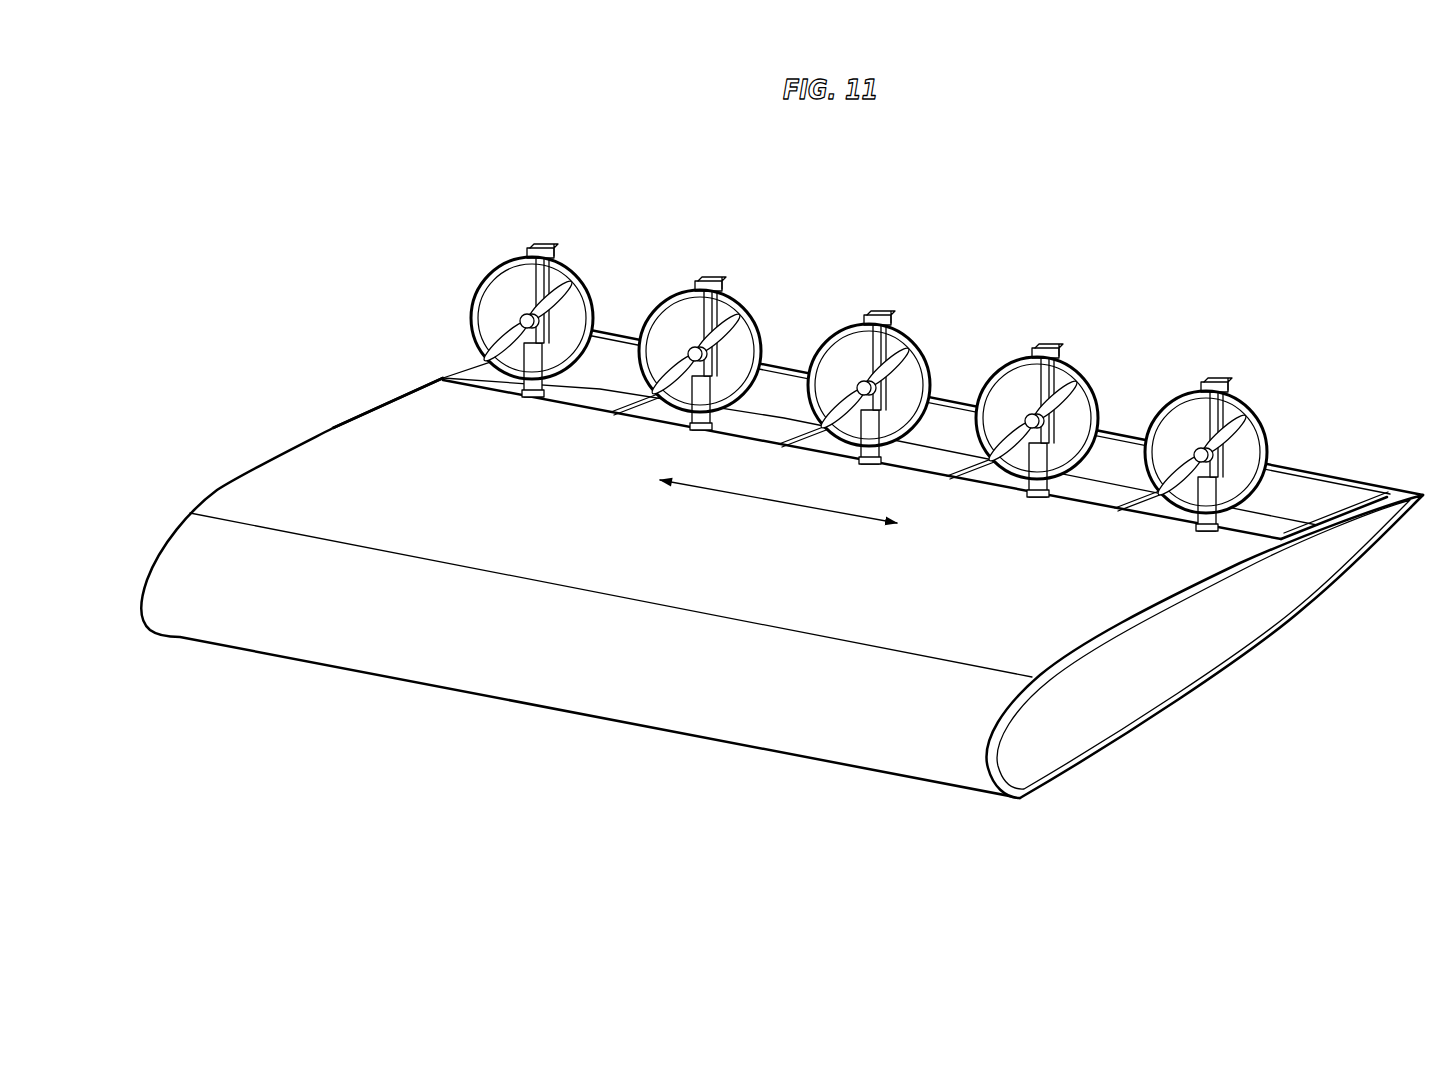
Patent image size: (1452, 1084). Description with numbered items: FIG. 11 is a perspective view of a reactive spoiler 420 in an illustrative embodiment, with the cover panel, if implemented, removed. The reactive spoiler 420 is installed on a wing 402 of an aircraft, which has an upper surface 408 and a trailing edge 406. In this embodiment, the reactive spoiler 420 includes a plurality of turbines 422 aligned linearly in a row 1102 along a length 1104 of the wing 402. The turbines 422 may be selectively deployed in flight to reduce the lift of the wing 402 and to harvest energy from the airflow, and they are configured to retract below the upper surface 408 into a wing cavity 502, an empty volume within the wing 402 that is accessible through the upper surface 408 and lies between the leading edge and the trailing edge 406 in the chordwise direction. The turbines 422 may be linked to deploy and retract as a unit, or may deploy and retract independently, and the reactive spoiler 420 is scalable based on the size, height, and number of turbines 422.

The wing 402 is at (337, 640).
The trailing edge 406 is at (1401, 487).
The upper surface 408 is at (337, 447).
The reactive spoiler 420 is at (1333, 367).
The turbine 422 is at (554, 248).
The wing cavity 502 is at (1298, 491).
The row 1102 is at (409, 314).
The length 1104 is at (713, 486).